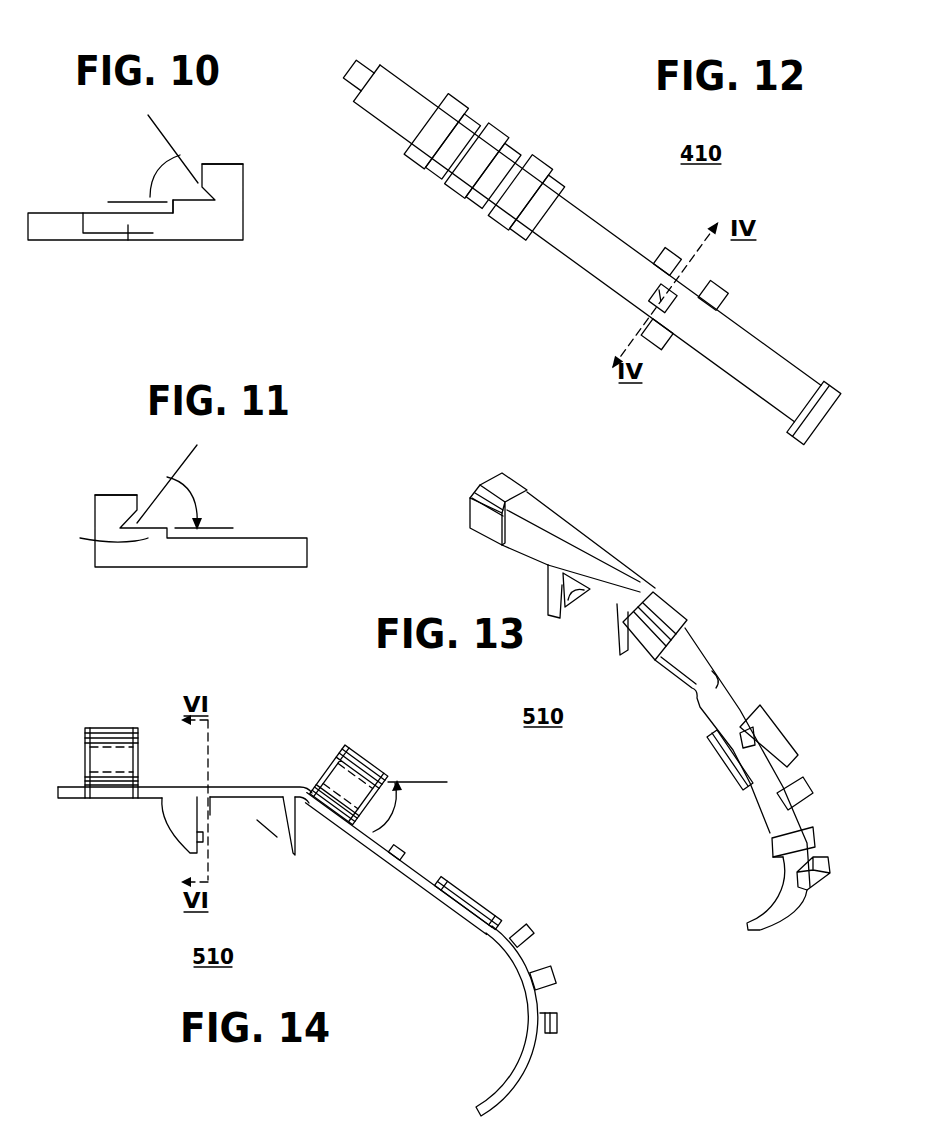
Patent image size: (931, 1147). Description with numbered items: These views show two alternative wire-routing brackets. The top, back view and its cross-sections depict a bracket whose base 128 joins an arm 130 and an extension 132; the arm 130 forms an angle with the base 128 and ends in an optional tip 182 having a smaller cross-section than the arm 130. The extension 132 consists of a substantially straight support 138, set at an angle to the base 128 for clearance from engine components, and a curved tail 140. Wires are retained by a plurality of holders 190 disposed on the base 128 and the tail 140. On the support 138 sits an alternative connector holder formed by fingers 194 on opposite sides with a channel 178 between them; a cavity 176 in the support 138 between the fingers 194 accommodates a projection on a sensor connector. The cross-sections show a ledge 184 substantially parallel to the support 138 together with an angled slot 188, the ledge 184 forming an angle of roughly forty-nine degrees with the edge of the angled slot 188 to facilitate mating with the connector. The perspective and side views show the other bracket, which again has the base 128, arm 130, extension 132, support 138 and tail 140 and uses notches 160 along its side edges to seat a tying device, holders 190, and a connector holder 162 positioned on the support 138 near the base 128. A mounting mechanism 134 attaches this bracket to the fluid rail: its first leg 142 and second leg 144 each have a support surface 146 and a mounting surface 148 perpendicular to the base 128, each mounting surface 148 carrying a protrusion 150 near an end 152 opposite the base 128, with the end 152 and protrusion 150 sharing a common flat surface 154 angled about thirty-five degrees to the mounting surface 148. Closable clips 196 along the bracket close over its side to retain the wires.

In FIG. 12, the base 128 is at (462, 135).
In FIG. 13, the base 128 is at (570, 555).
In FIG. 14, the base 128 is at (227, 790).
In FIG. 12, the arm 130 is at (398, 133).
In FIG. 13, the arm 130 is at (530, 522).
In FIG. 14, the arm 130 is at (148, 793).
In FIG. 12, the extension 132 is at (703, 363).
In FIG. 13, the extension 132 is at (740, 690).
In FIG. 14, the extension 132 is at (427, 878).
In FIG. 13, the mounting mechanism 134 is at (503, 586).
In FIG. 14, the mounting mechanism 134 is at (362, 859).
In FIG. 10, the support 138 is at (42, 230).
In FIG. 11, the support 138 is at (210, 558).
In FIG. 12, the support 138 is at (553, 223).
In FIG. 13, the support 138 is at (722, 715).
In FIG. 14, the support 138 is at (385, 840).
In FIG. 12, the tail 140 is at (733, 345).
In FIG. 13, the tail 140 is at (773, 793).
In FIG. 14, the tail 140 is at (543, 1005).
In FIG. 14, the first leg 142 is at (190, 847).
In FIG. 14, the second leg 144 is at (298, 832).
In FIG. 14, the support surface 146 is at (182, 843).
In FIG. 14, the mounting surface 148 is at (282, 803).
In FIG. 14, the protrusion 150 is at (204, 842).
In FIG. 14, the end 152 is at (190, 857).
In FIG. 14, the common flat surface 154 is at (213, 863).
In FIG. 13, the notches 160 is at (690, 690).
In FIG. 14, the notches 160 is at (414, 872).
In FIG. 13, the connector holder 162 is at (730, 767).
In FIG. 14, the connector holder 162 is at (465, 910).
In FIG. 10, the cavity 176 is at (128, 240).
In FIG. 12, the cavity 176 is at (653, 298).
In FIG. 10, the channel 178 is at (97, 207).
In FIG. 11, the channel 178 is at (235, 528).
In FIG. 12, the channel 178 is at (694, 293).
In FIG. 12, the tip 182 is at (356, 68).
In FIG. 10, the ledge 184 is at (188, 203).
In FIG. 11, the ledge 184 is at (82, 539).
In FIG. 10, the angled slot 188 is at (197, 183).
In FIG. 11, the angled slot 188 is at (143, 507).
In FIG. 12, the holders 190 is at (455, 103).
In FIG. 13, the holders 190 is at (807, 787).
In FIG. 14, the holders 190 is at (530, 937).
In FIG. 10, the fingers 194 is at (243, 197).
In FIG. 11, the fingers 194 is at (95, 513).
In FIG. 12, the fingers 194 is at (663, 257).
In FIG. 13, the closable clips 196 is at (505, 483).
In FIG. 14, the closable clips 196 is at (140, 758).